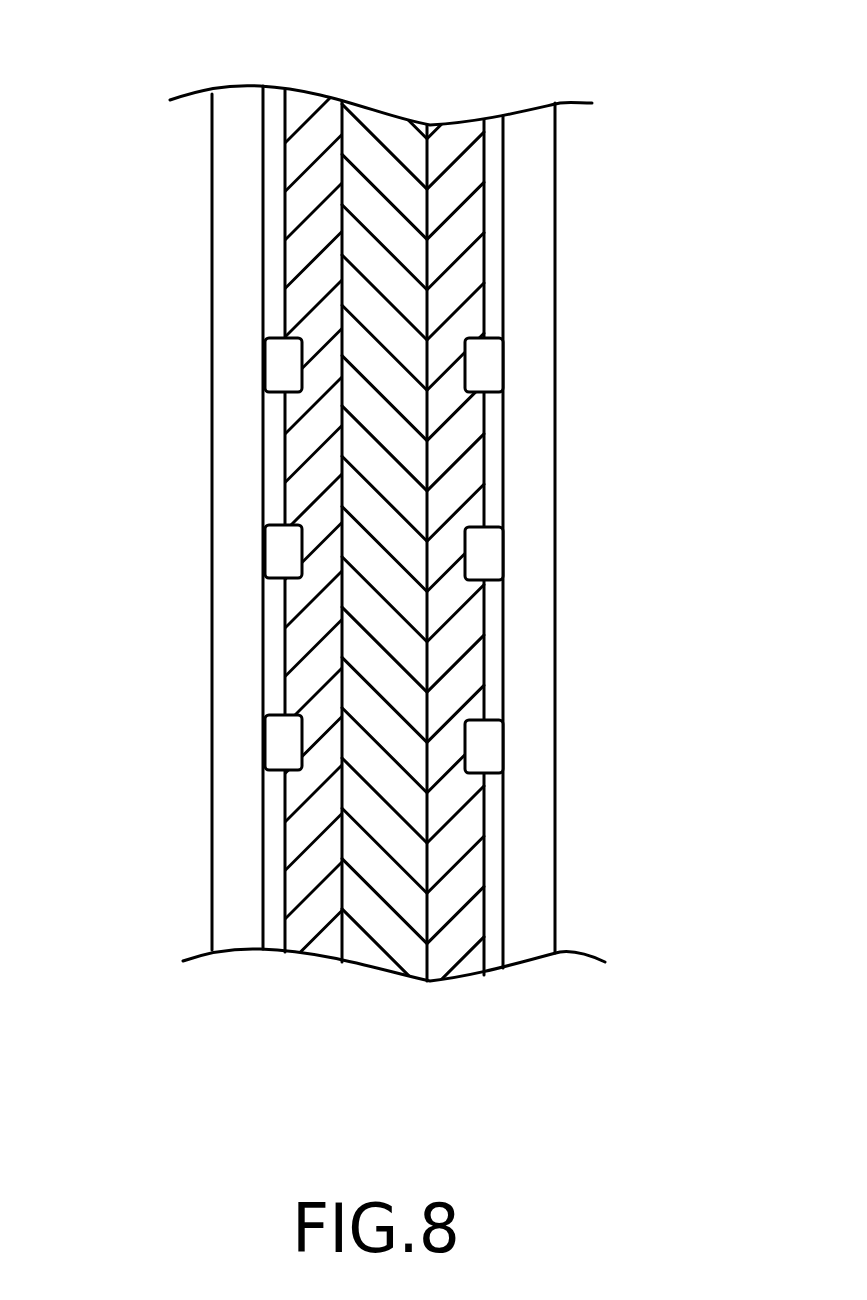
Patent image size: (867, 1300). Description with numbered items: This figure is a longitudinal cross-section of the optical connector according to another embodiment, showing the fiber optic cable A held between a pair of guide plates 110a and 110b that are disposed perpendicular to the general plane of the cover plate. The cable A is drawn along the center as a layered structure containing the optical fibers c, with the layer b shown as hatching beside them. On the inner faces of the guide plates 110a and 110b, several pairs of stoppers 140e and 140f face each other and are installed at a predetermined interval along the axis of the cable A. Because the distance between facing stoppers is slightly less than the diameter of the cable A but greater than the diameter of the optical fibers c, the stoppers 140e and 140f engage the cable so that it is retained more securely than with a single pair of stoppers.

The guide plate 110a is at (230, 180).
The guide plate 110b is at (537, 163).
The stopper 140e is at (280, 363).
The stopper 140f is at (492, 360).
The layer b is at (315, 120).
The optical fiber c is at (383, 120).
The fiber optic cable A is at (305, 976).